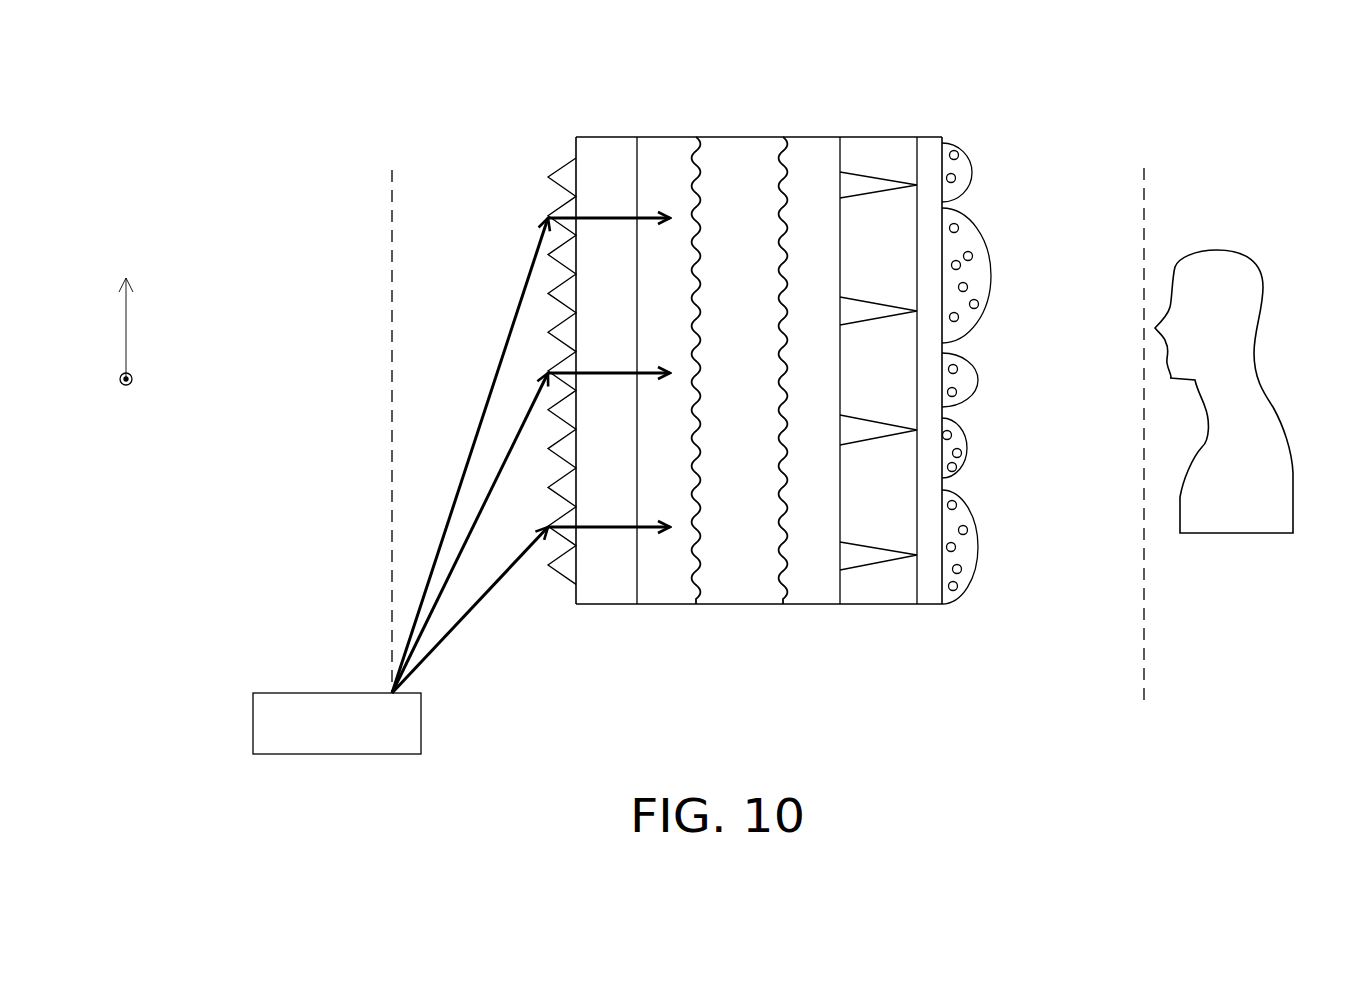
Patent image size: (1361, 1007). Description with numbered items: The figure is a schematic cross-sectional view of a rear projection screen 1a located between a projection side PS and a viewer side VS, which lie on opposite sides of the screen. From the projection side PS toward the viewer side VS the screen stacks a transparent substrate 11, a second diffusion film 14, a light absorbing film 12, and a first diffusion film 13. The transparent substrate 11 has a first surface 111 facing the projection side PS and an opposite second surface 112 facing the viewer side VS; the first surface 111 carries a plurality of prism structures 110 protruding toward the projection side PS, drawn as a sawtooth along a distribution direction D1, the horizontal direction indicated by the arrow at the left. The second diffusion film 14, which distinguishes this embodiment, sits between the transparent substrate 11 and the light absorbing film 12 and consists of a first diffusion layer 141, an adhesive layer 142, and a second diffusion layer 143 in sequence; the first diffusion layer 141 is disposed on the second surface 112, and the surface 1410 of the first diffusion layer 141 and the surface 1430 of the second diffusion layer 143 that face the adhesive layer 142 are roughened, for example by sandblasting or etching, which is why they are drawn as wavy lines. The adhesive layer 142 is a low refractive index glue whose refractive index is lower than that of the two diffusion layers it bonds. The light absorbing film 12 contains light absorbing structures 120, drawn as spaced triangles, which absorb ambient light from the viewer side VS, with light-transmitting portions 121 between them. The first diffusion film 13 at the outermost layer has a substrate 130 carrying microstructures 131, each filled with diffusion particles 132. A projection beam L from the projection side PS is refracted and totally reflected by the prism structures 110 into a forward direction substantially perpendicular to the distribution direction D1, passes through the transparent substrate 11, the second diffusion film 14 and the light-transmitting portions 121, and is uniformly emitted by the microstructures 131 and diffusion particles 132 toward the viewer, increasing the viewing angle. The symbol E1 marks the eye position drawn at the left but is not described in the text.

The rear projection screen 1a is at (1025, 160).
The transparent substrate 11 is at (650, 72).
The prism structures 110 is at (565, 173).
The first surface 111 is at (582, 172).
The second surface 112 is at (634, 165).
The second diffusion film 14 is at (848, 72).
The first diffusion layer 141 is at (680, 370).
The adhesive layer 142 is at (748, 173).
The second diffusion layer 143 is at (803, 370).
The surface of the first diffusion layer 1410 is at (692, 574).
The surface of the second diffusion layer 1430 is at (786, 574).
The light absorbing film 12 is at (995, 72).
The light absorbing structures 120 is at (867, 185).
The light-transmitting portions 121 is at (902, 167).
The first diffusion film 13 is at (1083, 553).
The substrate 130 is at (928, 594).
The microstructures 131 is at (963, 582).
The diffusion particles 132 is at (956, 548).
The projection beam L is at (480, 413).
The projection side PS is at (390, 232).
The viewer side VS is at (1145, 233).
The distribution direction D1 is at (124, 308).
The eyes E1, E1' E1 is at (184, 384).